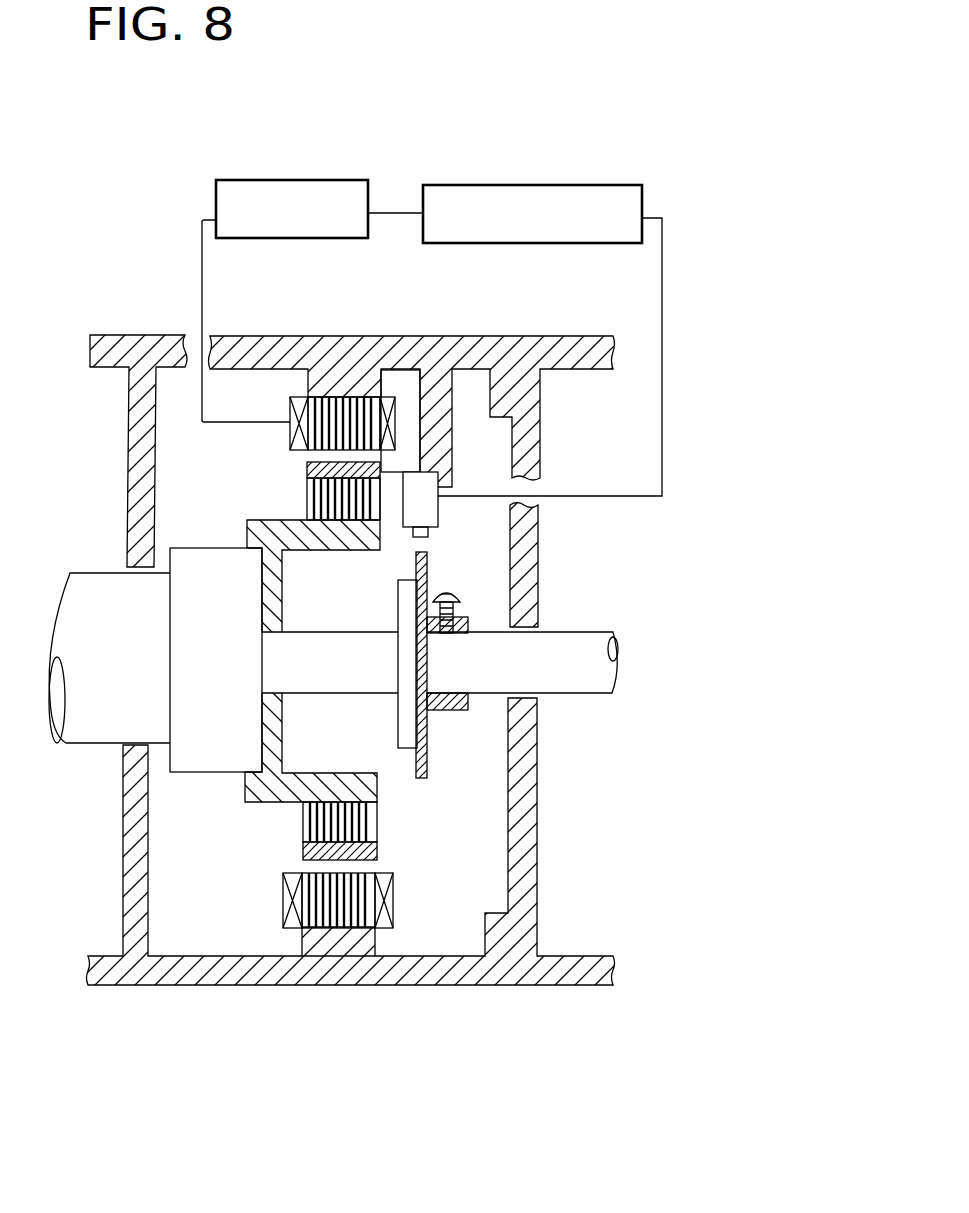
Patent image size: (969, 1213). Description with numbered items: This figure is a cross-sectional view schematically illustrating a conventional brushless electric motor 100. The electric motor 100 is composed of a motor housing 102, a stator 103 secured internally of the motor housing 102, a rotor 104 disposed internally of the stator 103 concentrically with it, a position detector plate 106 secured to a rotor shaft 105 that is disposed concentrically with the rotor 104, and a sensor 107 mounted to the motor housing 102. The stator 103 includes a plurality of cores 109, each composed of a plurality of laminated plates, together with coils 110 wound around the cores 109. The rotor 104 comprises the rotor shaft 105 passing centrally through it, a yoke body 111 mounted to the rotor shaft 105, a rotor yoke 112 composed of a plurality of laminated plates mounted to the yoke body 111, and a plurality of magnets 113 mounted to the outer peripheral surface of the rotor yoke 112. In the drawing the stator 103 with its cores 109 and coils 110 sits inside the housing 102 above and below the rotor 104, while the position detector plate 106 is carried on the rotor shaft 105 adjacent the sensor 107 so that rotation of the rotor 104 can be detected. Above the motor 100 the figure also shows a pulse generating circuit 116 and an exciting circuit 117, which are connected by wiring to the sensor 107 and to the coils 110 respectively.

The electric motor 100 is at (298, 1006).
The motor housing 102 is at (538, 867).
The stator 103 is at (363, 931).
The rotor 104 is at (262, 803).
The rotor shaft 105 is at (567, 695).
The position detector plate 106 is at (417, 775).
The sensor 107 is at (438, 503).
The cores 109 is at (353, 423).
The coils 110 is at (290, 412).
The yoke body 111 is at (280, 520).
The rotor yoke 112 is at (383, 507).
The magnets 113 is at (307, 471).
The pulse generating circuit 116 is at (537, 185).
The exciting circuit 117 is at (293, 178).